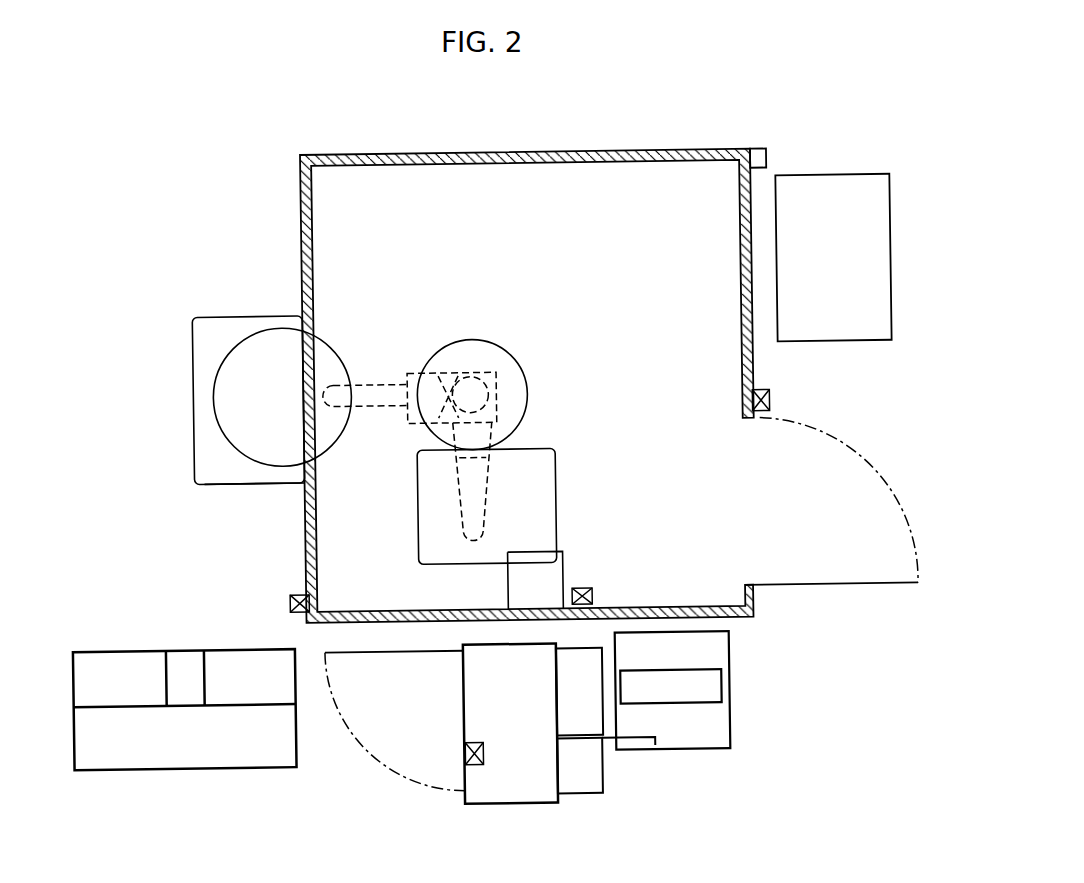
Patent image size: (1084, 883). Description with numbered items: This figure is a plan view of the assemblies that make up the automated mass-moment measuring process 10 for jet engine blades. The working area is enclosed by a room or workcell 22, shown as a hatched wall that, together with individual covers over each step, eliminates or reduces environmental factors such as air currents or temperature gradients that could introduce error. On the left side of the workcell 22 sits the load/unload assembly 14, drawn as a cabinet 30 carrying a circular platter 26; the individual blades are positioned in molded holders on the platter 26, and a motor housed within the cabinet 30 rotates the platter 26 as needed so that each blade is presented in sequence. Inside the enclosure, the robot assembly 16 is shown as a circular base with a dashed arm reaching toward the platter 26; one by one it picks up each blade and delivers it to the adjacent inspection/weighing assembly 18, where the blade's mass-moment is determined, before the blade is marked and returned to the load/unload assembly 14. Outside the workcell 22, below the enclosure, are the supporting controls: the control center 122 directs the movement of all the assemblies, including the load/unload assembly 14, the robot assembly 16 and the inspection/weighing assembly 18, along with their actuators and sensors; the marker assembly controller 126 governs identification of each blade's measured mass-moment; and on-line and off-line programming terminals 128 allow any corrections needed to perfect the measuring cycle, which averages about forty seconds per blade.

The process 10 is at (600, 351).
The room or workcell 22 is at (378, 156).
The load/unload assembly 14 is at (243, 402).
The platter 26 is at (242, 337).
The cabinet 30 is at (267, 484).
The robot assembly 16 is at (527, 347).
The inspection/weighing assembly 18 is at (562, 494).
The control center 122 is at (502, 806).
The marker assembly controller 126 is at (714, 696).
The programming terminals 128 is at (213, 767).